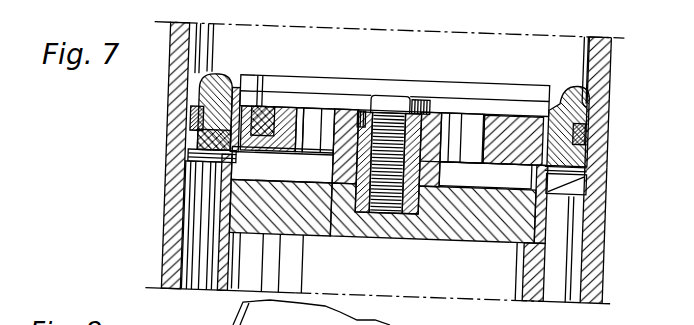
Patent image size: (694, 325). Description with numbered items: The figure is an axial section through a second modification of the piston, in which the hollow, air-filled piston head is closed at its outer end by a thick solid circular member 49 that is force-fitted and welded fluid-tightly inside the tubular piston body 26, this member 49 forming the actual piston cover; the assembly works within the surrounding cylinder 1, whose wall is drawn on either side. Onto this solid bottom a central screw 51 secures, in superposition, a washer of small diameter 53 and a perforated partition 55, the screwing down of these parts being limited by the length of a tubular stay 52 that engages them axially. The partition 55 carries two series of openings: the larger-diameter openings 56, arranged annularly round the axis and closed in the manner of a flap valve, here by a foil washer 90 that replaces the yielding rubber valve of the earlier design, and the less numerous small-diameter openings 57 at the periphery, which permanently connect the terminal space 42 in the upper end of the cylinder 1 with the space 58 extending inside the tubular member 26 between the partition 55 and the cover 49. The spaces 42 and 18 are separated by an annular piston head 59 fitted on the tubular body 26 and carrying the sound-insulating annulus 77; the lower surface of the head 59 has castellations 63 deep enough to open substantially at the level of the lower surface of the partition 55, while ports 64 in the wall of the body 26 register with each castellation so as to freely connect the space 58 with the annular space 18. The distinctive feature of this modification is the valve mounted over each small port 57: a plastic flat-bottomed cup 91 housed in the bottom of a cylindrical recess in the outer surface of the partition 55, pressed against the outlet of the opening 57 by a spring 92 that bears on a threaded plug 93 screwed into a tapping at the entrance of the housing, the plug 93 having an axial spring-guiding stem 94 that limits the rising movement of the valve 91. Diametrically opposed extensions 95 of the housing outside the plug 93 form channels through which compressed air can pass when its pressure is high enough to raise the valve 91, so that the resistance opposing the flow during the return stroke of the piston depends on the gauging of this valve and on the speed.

The cylinder housing 1 is at (597, 66).
The annular space 18 is at (583, 278).
The tubular piston body 26 is at (537, 276).
The terminal space 42 is at (612, 77).
The solid circular member 49 is at (442, 233).
The central screw 51 is at (390, 101).
The tubular stay 52 is at (347, 180).
The washer of small diameter 53 is at (305, 238).
The perforated partition 55 is at (504, 122).
The larger-diameter openings 56 is at (336, 103).
The small-diameter openings 57 is at (257, 155).
The space 58 is at (507, 183).
The annular piston head 59 is at (200, 102).
The castellations 63 is at (580, 184).
The ports 64 is at (590, 162).
The sound-insulating annulus 77 is at (600, 123).
The foil washer 90 is at (469, 166).
The flat-bottomed cup valve 91 is at (297, 131).
The spring 92 is at (292, 113).
The threaded plug 93 is at (257, 80).
The spring-guiding stem 94 is at (205, 152).
The diametrically opposed extensions 95 is at (194, 166).